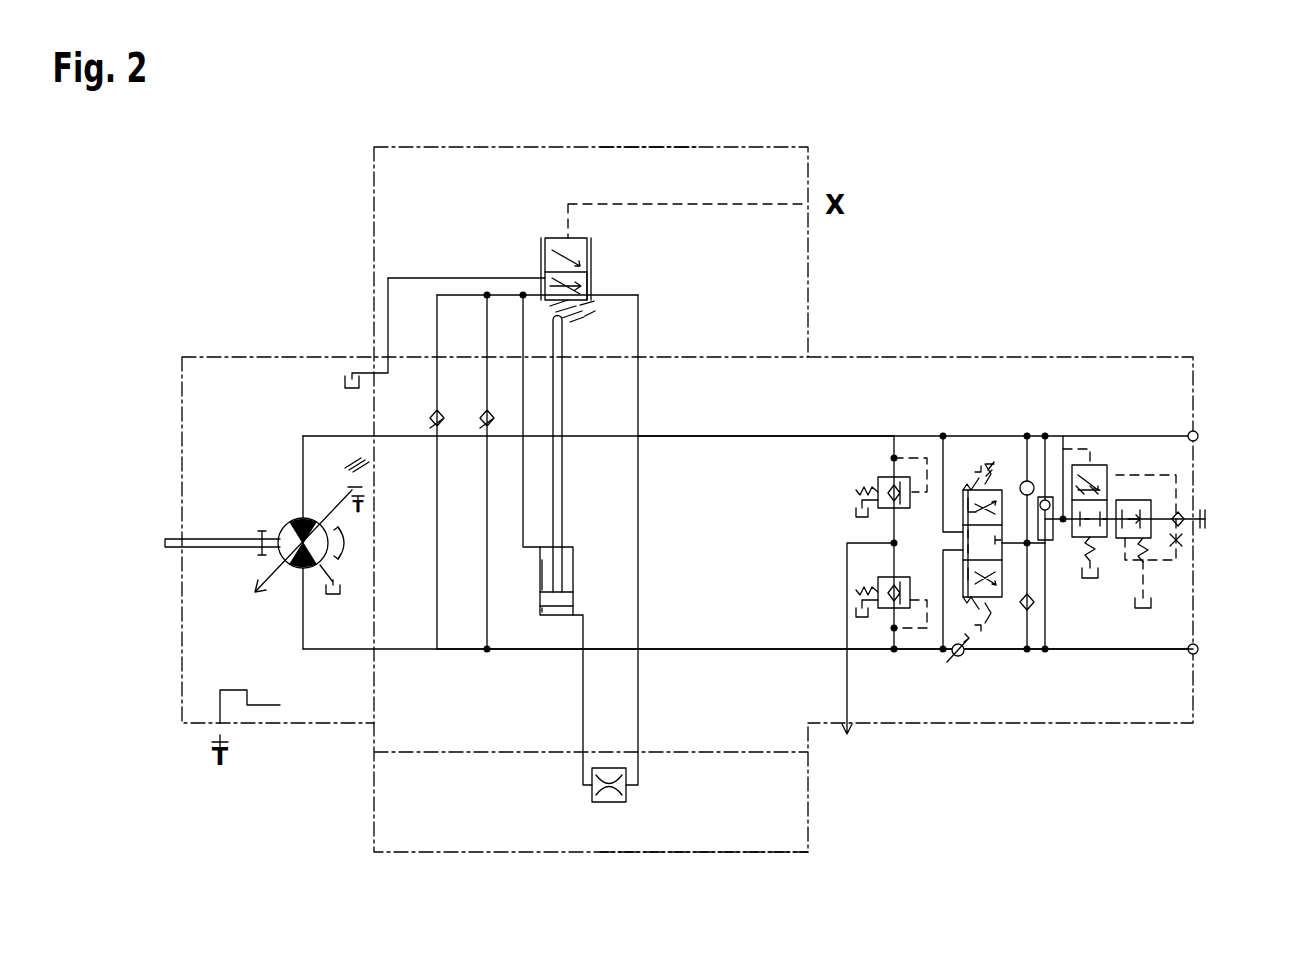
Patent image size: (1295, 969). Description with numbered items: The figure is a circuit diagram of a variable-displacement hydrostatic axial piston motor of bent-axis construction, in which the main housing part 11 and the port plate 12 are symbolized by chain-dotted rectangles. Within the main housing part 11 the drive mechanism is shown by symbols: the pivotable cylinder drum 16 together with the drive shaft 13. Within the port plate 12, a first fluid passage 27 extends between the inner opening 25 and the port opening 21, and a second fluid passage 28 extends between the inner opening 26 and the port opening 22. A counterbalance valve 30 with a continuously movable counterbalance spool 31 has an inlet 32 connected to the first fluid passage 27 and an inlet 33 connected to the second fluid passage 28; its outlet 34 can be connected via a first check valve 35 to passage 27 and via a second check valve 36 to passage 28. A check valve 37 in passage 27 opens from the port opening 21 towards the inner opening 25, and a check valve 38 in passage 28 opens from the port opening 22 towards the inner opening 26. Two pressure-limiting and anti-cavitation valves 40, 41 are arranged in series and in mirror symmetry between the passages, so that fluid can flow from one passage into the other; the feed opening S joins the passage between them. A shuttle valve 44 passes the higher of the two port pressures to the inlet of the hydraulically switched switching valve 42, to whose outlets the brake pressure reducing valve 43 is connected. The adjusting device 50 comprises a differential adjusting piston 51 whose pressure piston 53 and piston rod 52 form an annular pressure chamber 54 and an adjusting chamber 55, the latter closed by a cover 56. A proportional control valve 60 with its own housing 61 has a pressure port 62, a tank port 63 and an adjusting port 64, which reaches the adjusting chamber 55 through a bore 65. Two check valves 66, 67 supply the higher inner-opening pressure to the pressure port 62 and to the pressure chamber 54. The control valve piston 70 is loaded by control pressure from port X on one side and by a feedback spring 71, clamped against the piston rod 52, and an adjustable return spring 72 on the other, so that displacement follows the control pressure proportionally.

The main housing part 11 is at (265, 730).
The port plate 12 is at (1126, 725).
The drive shaft 13 is at (225, 552).
The cylinder drum 16 is at (286, 528).
The port opening 21 is at (1199, 649).
The port opening 22 is at (1199, 436).
The inner opening 25 is at (334, 650).
The inner opening 26 is at (372, 430).
The first fluid passage 27 is at (815, 691).
The second fluid passage 28 is at (766, 435).
The counterbalance valve 30 is at (1016, 598).
The counterbalance spool 31 is at (983, 605).
The inlet of counterbalance valve 32 is at (945, 548).
The inlet of counterbalance valve 33 is at (945, 522).
The outlet of counterbalance valve 34 is at (990, 478).
The check valve 35 is at (1034, 604).
The check valve 36 is at (1045, 495).
The check valve 37 is at (954, 658).
The check valve 38 is at (958, 436).
The pressure-limiting and anti-cavitation valve 40 is at (882, 610).
The pressure-limiting and anti-cavitation valve 41 is at (880, 476).
The switching valve 42 is at (1100, 470).
The brake pressure reducing valve 43 is at (1150, 497).
The shuttle valve 44 is at (1092, 466).
The adjusting device 50 is at (534, 574).
The adjusting piston 51 is at (598, 529).
The piston rod 52 is at (564, 450).
The pressure piston 53 is at (570, 603).
The pressure chamber 54 is at (575, 557).
The adjusting chamber 55 is at (557, 616).
The cover 56 is at (809, 841).
The control valve 60 is at (846, 140).
The housing of control valve 61 is at (706, 146).
The pressure port of control valve 62 is at (545, 278).
The tank port of control valve 63 is at (548, 252).
The adjusting port of control valve 64 is at (588, 298).
The bore 65 is at (640, 718).
The check valve 66 is at (486, 430).
The check valve 67 is at (436, 430).
The control valve piston 70 is at (560, 238).
The feedback spring 71 is at (535, 296).
The return spring 72 is at (642, 300).